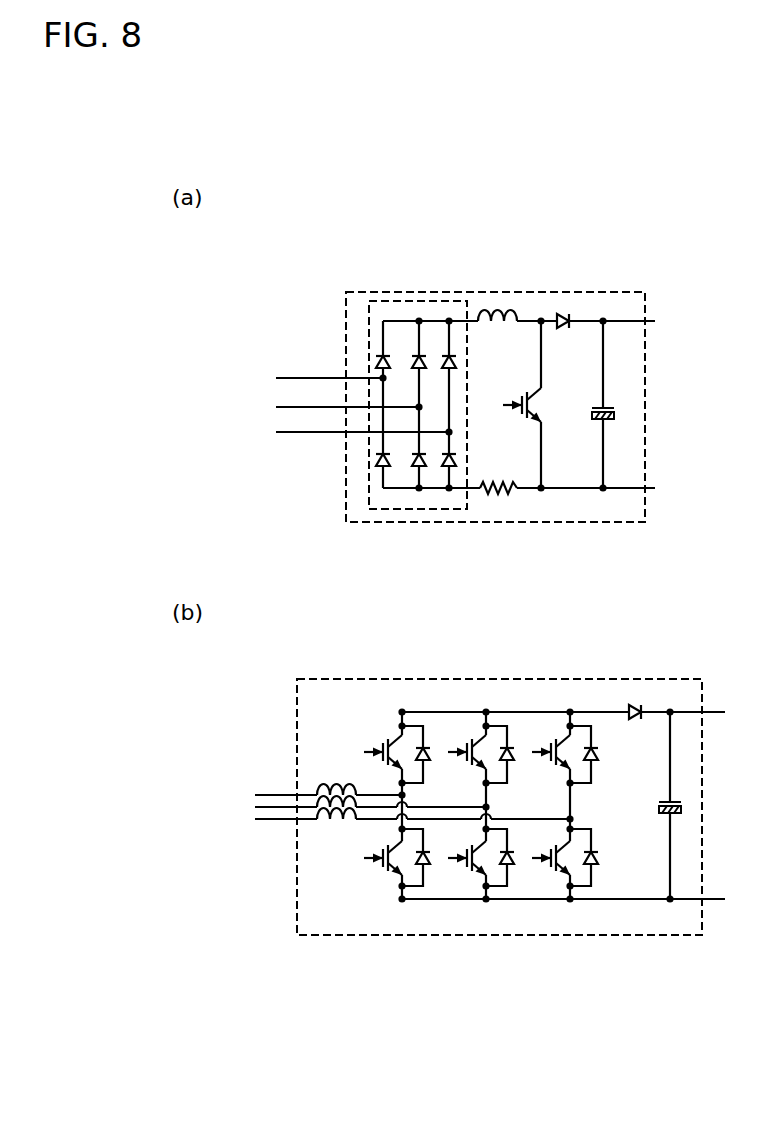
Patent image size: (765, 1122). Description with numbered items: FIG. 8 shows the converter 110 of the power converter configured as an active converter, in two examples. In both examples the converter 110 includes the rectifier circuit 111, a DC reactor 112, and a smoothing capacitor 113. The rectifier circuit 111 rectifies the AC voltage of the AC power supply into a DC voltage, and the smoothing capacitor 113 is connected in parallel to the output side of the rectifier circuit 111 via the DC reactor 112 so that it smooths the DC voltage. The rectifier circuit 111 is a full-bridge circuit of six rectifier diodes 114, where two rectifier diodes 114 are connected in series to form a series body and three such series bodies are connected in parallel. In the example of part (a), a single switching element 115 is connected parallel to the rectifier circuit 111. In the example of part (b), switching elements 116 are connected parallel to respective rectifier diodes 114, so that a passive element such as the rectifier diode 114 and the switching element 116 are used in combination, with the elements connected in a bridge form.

The converter 110 is at (368, 292).
The rectifier circuit 111 is at (436, 301).
The DC reactor 112 is at (491, 306).
The smoothing capacitor 113 is at (599, 408).
The rectifier diode 114 is at (377, 362).
The switching element 115 is at (533, 396).
The switching element 116 is at (393, 744).